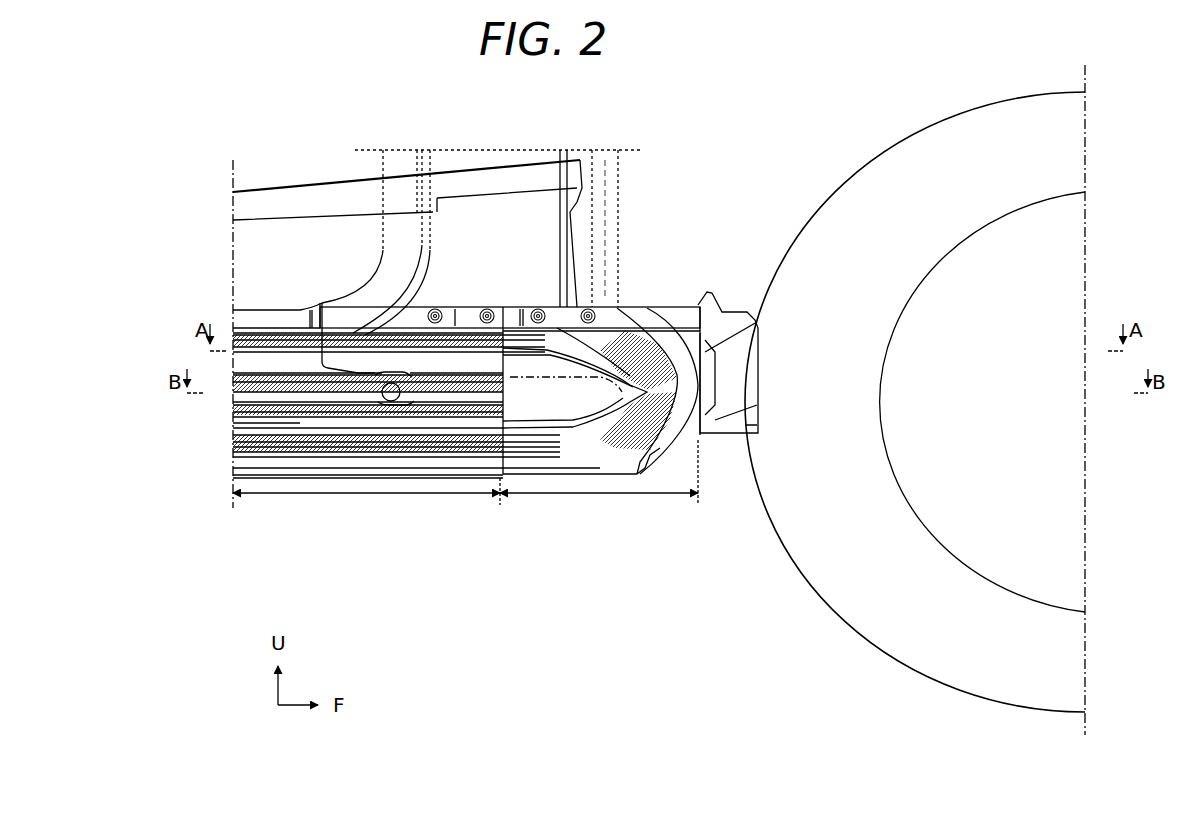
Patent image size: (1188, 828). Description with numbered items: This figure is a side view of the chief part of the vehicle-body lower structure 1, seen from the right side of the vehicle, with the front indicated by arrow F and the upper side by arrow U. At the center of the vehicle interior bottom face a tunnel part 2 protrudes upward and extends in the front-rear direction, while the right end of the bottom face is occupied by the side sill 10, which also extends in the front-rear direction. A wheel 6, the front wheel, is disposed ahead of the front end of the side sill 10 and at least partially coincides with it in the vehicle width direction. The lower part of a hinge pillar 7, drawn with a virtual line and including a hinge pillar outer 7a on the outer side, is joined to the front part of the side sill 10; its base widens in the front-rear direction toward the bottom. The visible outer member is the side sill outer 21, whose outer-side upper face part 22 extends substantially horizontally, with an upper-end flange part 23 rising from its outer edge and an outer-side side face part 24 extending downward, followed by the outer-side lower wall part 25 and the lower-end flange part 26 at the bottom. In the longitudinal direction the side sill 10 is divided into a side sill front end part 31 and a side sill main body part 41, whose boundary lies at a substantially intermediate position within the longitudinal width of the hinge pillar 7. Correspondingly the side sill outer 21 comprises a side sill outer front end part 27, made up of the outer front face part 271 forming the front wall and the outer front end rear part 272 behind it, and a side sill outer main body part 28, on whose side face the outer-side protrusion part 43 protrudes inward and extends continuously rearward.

The vehicle-body lower structure 1 is at (756, 146).
The tunnel part 2 is at (290, 185).
The wheel 6 is at (832, 613).
The hinge pillar 7 is at (632, 190).
The hinge pillar outer 7a is at (607, 233).
The side sill 10 is at (294, 274).
The side sill outer 21 is at (264, 304).
The outer-side upper face part 22 is at (473, 306).
The upper-end flange part 23 is at (377, 306).
The outer-side side face part 24 is at (255, 421).
The outer-side lower wall part 25 is at (258, 448).
The lower-end flange part 26 is at (260, 478).
The side sill outer front end part 27 is at (629, 409).
The side sill outer main body part 28 is at (368, 430).
The side sill front end part 31 is at (630, 383).
The side sill main body part 41 is at (368, 401).
The outer-side protrusion part 43 is at (353, 418).
The outer front face part 271 is at (665, 446).
The outer front end rear part 272 is at (540, 425).